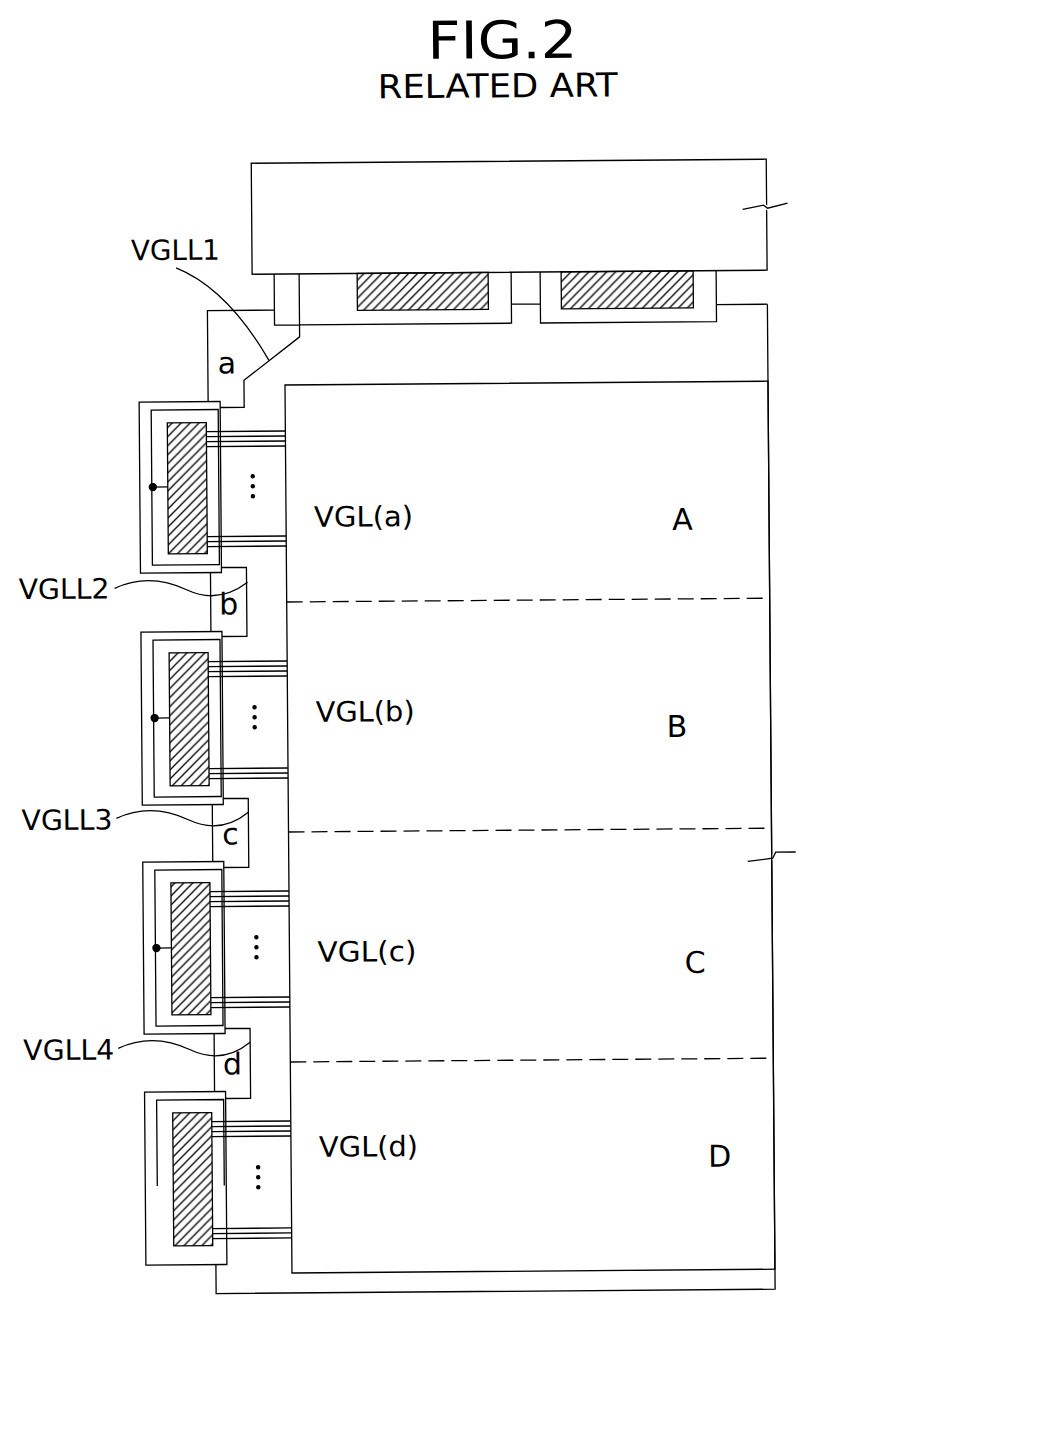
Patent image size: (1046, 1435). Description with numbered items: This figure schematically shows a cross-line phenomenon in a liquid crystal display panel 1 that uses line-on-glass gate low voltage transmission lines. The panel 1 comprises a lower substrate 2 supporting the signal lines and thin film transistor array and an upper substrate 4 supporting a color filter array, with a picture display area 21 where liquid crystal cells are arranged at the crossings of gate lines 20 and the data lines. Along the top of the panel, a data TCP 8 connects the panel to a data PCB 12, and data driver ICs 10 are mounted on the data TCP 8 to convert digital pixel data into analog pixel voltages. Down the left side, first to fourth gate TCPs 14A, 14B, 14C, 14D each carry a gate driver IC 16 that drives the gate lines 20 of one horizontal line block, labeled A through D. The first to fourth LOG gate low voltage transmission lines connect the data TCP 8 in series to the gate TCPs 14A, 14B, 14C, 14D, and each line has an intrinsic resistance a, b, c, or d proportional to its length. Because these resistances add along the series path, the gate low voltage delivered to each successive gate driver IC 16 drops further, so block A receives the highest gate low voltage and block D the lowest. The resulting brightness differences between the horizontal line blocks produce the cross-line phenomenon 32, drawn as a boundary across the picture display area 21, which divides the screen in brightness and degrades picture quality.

The liquid crystal display panel 1 is at (838, 779).
The lower substrate 2 is at (757, 367).
The upper substrate 4 is at (753, 428).
The data TCP 8 is at (713, 285).
The data driver IC 10 is at (583, 274).
The data PCB 12 is at (700, 170).
The first gate TCP 14A is at (143, 452).
The second gate TCP 14B is at (143, 687).
The third gate TCP 14C is at (144, 907).
The fourth gate TCP 14D is at (144, 1137).
The gate driver IC 16 is at (175, 528).
The gate lines 20 is at (275, 428).
The picture display area 21 is at (555, 681).
The cross-line phenomenon 32 is at (725, 604).